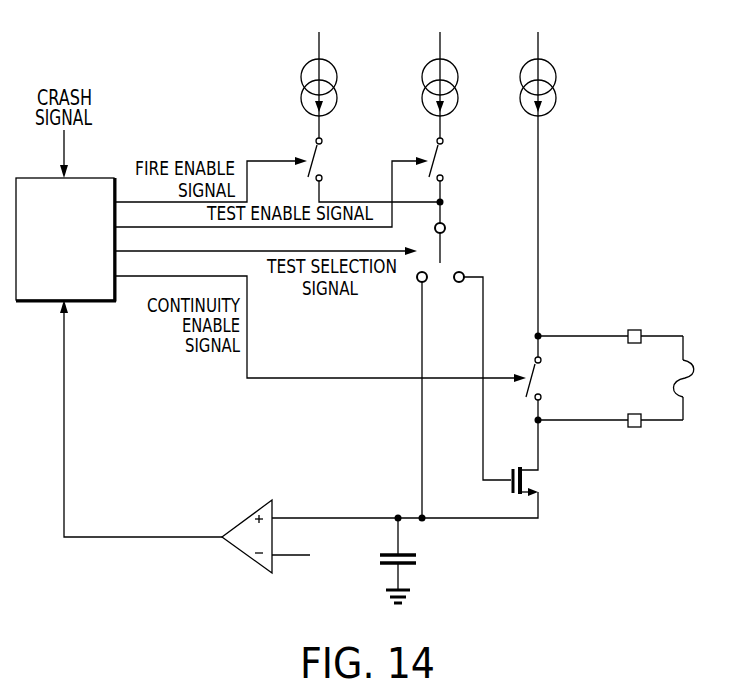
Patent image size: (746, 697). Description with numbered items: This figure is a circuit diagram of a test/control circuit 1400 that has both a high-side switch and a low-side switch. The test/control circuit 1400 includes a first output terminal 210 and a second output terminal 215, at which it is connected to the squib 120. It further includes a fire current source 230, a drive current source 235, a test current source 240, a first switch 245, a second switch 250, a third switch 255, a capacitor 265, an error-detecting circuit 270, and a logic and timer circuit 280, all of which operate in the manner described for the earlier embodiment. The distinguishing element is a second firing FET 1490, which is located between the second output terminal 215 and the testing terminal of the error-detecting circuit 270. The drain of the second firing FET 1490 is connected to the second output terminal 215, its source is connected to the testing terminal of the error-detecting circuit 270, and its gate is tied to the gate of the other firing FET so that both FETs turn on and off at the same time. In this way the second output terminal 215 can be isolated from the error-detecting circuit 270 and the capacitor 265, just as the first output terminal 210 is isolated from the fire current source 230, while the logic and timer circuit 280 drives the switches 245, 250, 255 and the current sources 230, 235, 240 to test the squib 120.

The test/control circuit 1400 is at (100, 52).
The logic and timer circuit 280 is at (94, 178).
The drive current source 235 is at (306, 60).
The test current source 240 is at (427, 60).
The fire current source 230 is at (525, 60).
The capacitor 265 is at (326, 161).
The third switch 255 is at (447, 161).
The first switch 245 is at (452, 254).
The second switch 250 is at (545, 378).
The first output terminal 210 is at (632, 329).
The second output terminal 215 is at (632, 414).
The squib 120 is at (690, 371).
The second firing FET 1490 is at (511, 467).
The error-detecting circuit 270 is at (238, 518).